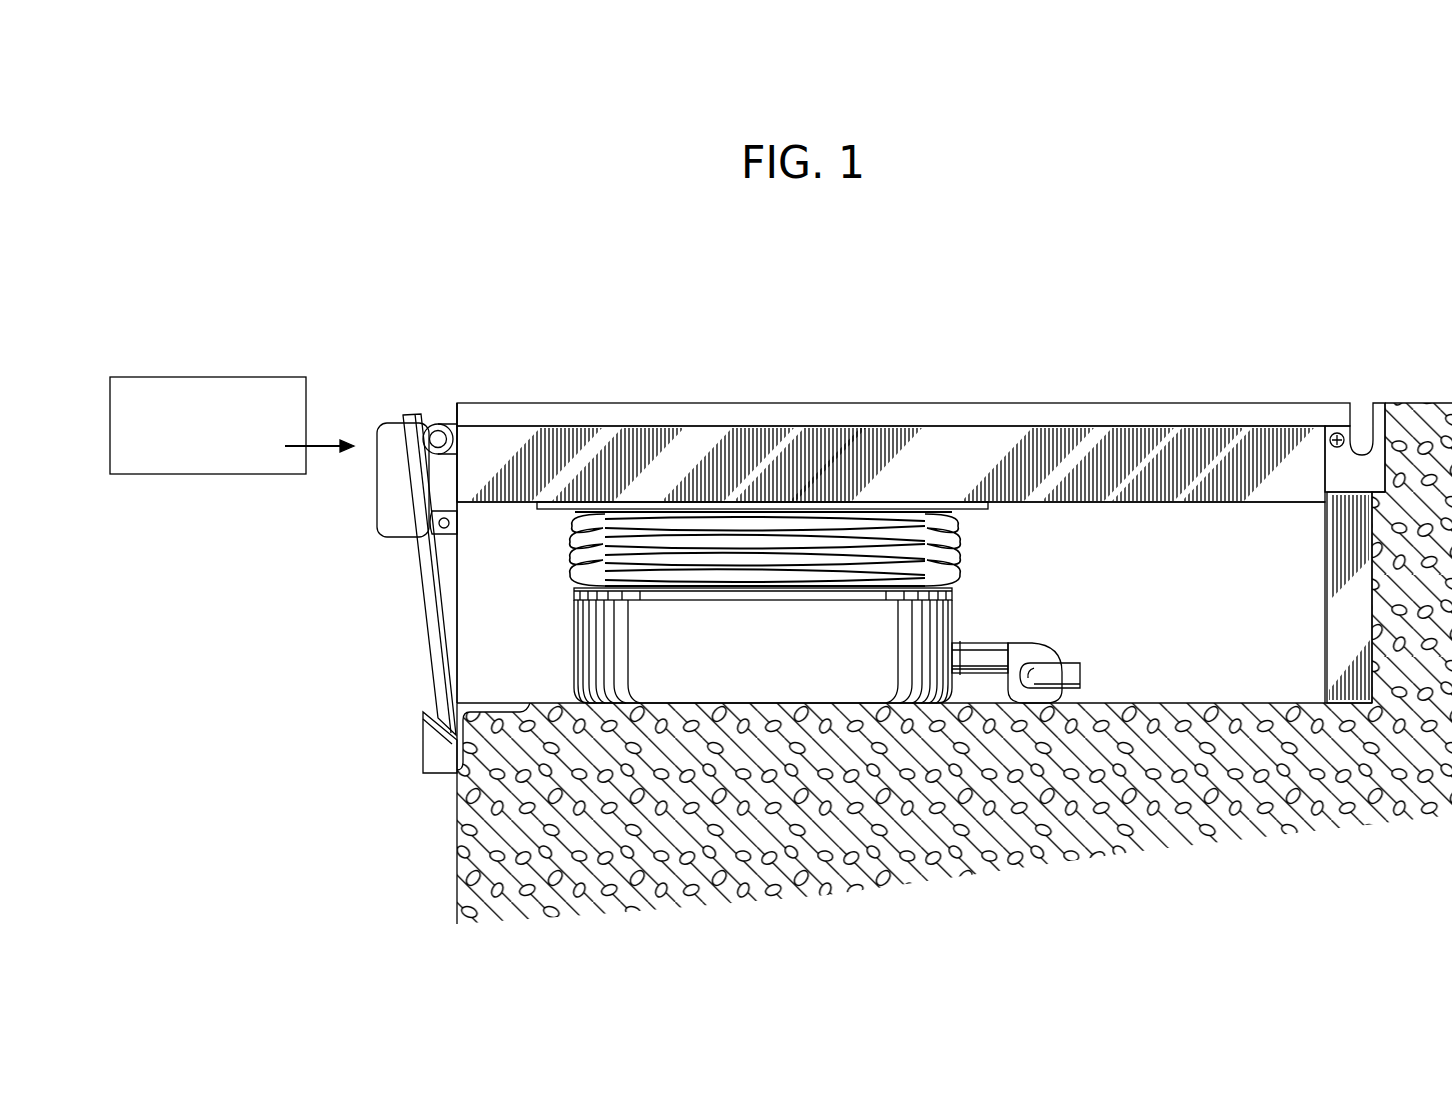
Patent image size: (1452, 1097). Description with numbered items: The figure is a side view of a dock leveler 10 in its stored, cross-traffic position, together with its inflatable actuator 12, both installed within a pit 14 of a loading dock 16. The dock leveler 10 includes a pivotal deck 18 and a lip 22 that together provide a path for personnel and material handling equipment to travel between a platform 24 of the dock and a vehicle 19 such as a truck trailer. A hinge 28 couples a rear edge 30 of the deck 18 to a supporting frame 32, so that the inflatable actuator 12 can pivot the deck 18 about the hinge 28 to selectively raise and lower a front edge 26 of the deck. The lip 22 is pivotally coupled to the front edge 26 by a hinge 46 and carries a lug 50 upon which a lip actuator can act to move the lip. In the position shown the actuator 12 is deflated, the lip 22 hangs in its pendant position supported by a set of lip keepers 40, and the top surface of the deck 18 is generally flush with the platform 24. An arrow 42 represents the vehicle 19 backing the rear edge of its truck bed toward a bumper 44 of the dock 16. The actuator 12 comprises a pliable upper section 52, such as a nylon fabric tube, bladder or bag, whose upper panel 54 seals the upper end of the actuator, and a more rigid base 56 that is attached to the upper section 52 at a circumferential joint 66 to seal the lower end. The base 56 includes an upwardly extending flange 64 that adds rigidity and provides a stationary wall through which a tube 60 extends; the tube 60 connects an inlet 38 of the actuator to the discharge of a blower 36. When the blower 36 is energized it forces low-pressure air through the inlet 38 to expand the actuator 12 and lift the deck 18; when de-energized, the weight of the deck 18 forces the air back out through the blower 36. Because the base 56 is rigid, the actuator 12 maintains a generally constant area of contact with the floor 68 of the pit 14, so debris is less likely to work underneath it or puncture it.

The dock leveler 10 is at (1183, 282).
The inflatable actuator 12 is at (1040, 553).
The pit 14 is at (891, 602).
The loading dock 16 is at (222, 752).
The deck 18 is at (703, 402).
The vehicle 19 is at (247, 377).
The lip 22 is at (426, 620).
The platform 24 is at (1417, 402).
The front edge 26 is at (455, 402).
The hinge 28 is at (1328, 447).
The rear edge 30 is at (1352, 402).
The supporting frame 32 is at (1325, 607).
The blower 36 is at (1046, 652).
The inlet 38 is at (963, 645).
The lip keepers 40 is at (423, 735).
The arrow 42 is at (318, 452).
The bumper 44 is at (392, 542).
The hinge 46 is at (432, 427).
The lug 50 is at (452, 540).
The pliable upper section 52 is at (957, 548).
The upper panel 54 is at (541, 509).
The base 56 is at (573, 663).
The tube 60 is at (985, 645).
The flange 64 is at (573, 625).
The circumferential joint 66 is at (572, 596).
The floor 68 is at (1225, 700).